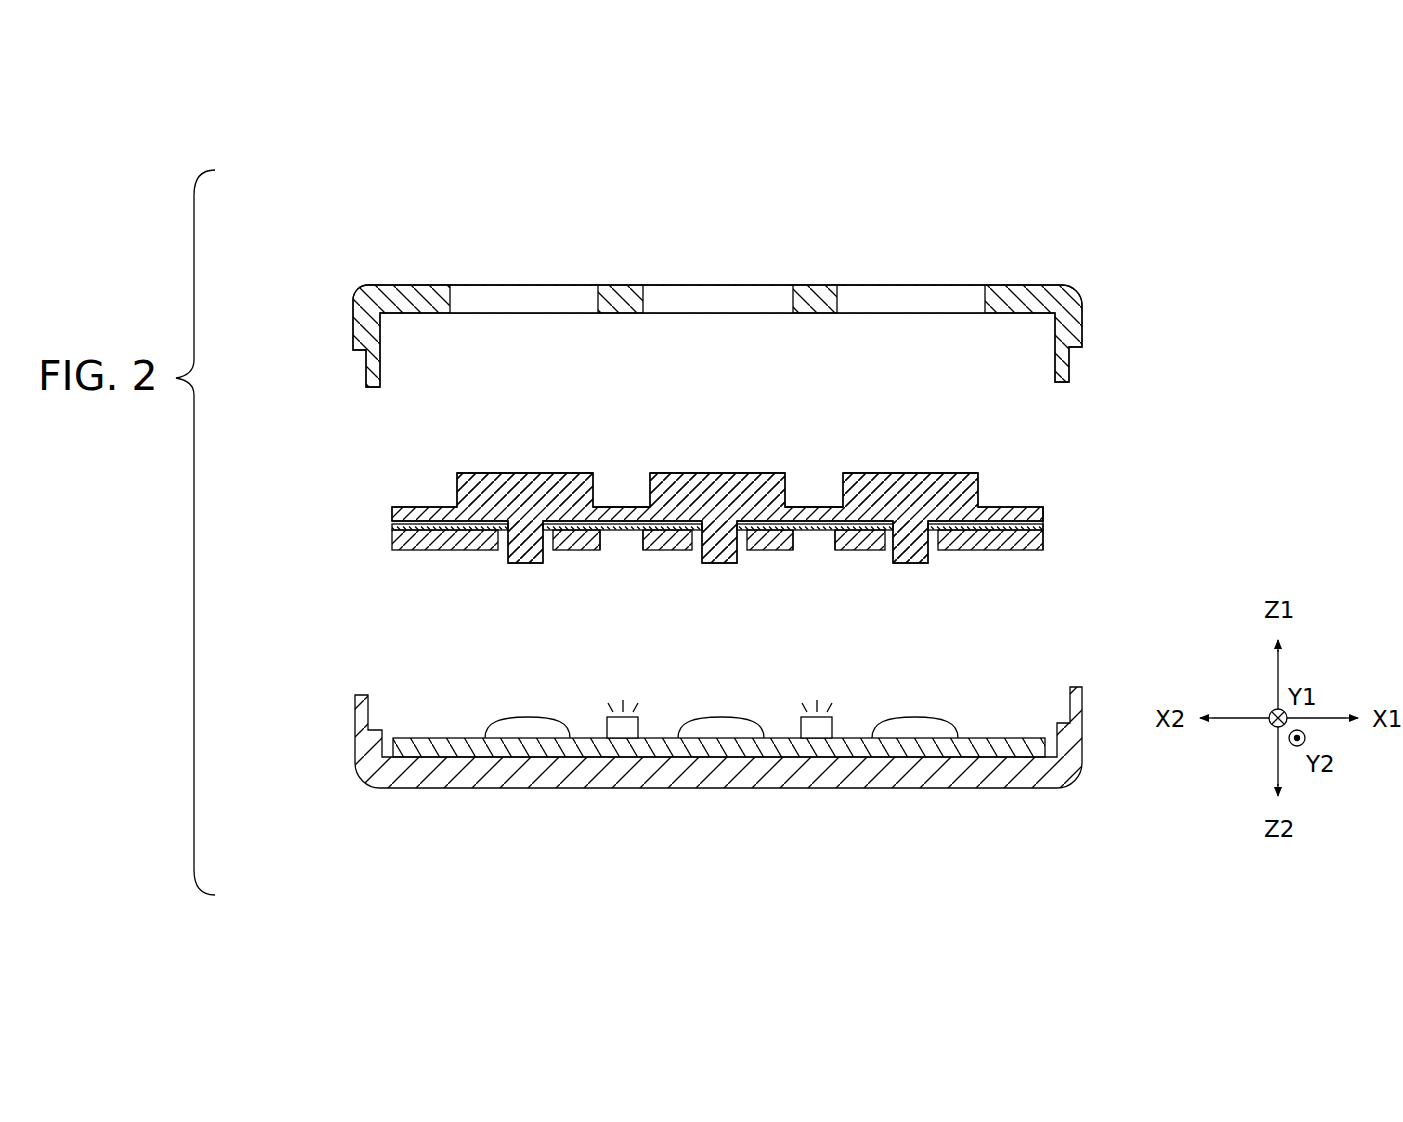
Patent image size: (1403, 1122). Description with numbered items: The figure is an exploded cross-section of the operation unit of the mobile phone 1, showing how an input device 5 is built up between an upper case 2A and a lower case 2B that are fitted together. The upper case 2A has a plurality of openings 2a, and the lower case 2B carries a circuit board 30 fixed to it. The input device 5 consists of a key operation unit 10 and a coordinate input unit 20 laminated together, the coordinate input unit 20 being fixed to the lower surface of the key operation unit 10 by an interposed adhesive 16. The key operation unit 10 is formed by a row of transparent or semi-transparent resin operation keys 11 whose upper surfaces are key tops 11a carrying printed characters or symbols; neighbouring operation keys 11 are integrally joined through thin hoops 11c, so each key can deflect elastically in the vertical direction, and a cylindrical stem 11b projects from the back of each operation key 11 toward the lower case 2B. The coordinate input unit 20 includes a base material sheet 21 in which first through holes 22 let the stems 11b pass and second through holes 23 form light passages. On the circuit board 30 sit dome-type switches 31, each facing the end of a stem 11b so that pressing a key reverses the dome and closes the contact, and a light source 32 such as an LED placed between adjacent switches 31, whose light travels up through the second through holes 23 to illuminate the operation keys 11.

The input device 1 is at (362, 240).
The upper case 2A is at (678, 285).
The opening 2a is at (555, 291).
The lower case 2B is at (355, 737).
The input device 5 is at (295, 487).
The key operation unit 10 is at (670, 503).
The operation key 11 is at (488, 471).
The key top 11a is at (560, 473).
The stem 11b is at (535, 564).
The hoop 11c is at (620, 506).
The adhesive 16 is at (1044, 523).
The coordinate input unit 20 is at (670, 576).
The base material sheet 21 is at (392, 537).
The first through hole 22 is at (498, 551).
The second through hole 23 is at (611, 553).
The circuit board 30 is at (990, 748).
The switch 31 is at (512, 730).
The light source 32 is at (623, 730).